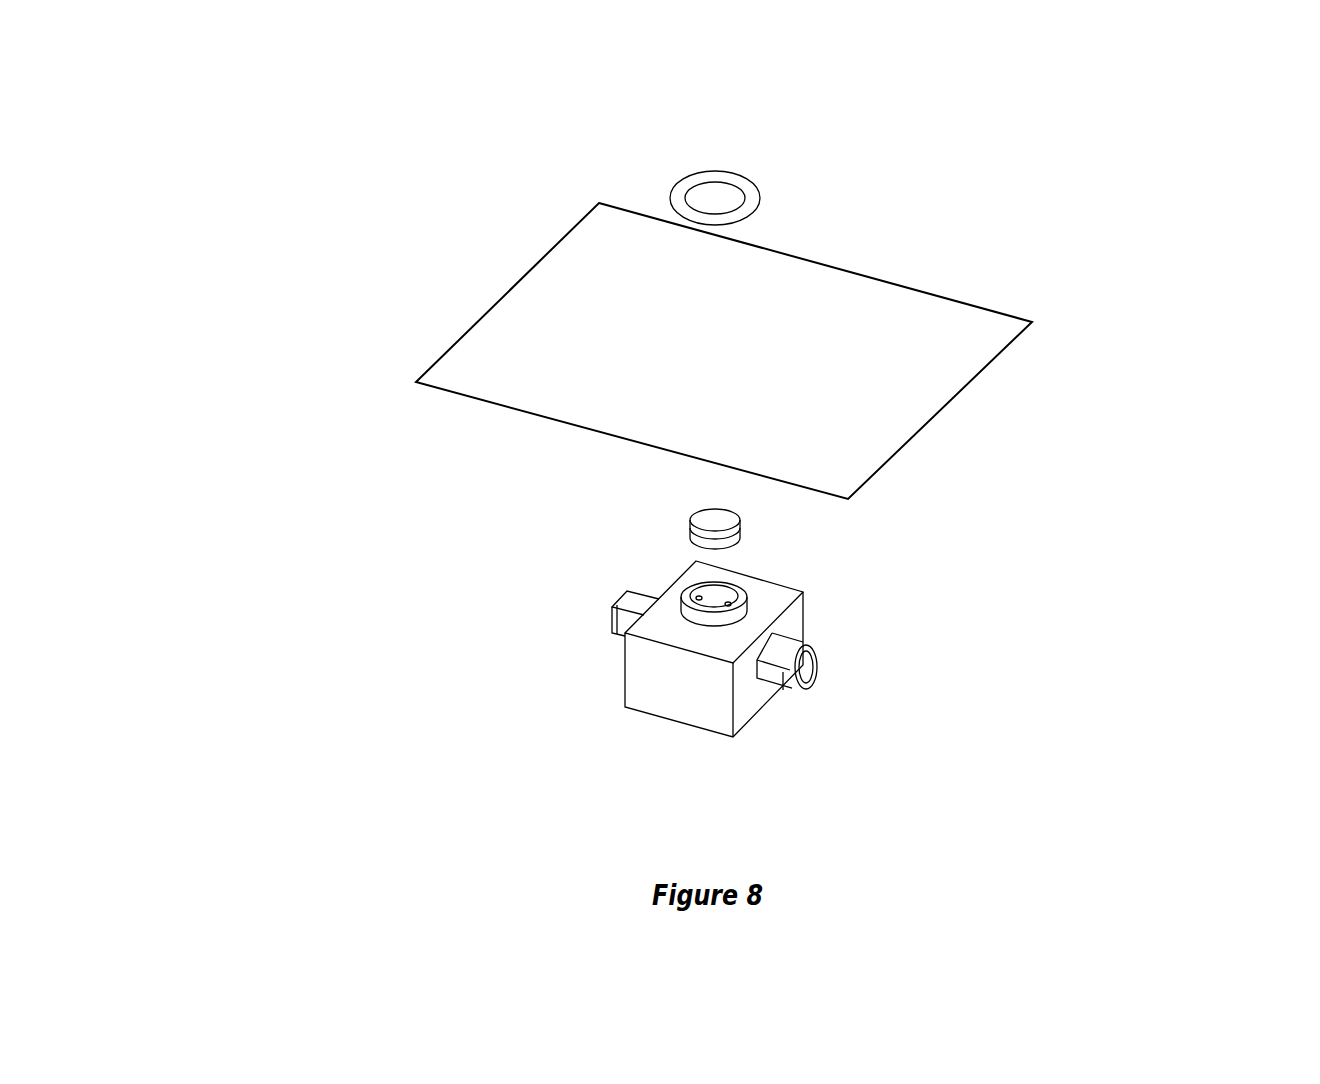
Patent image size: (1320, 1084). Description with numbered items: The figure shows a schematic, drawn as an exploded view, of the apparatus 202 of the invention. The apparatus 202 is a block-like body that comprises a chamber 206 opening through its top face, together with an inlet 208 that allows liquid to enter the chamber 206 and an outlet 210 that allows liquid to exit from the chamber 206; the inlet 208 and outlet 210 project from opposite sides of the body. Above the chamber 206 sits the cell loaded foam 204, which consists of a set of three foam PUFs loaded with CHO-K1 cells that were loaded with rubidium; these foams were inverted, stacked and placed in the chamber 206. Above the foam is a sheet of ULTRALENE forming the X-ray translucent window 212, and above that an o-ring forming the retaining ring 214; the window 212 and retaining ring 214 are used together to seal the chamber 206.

The apparatus 202 is at (705, 781).
The cell loaded foam 204 is at (712, 505).
The chamber 206 is at (715, 582).
The inlet 208 is at (618, 593).
The outlet 210 is at (815, 642).
The X-ray translucent window 212 is at (890, 281).
The retaining ring 214 is at (748, 175).